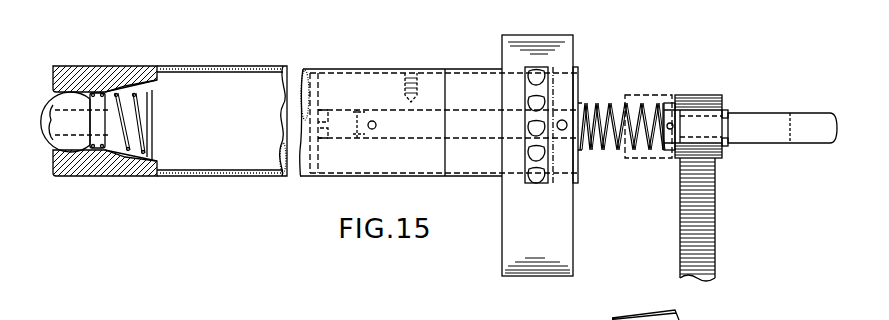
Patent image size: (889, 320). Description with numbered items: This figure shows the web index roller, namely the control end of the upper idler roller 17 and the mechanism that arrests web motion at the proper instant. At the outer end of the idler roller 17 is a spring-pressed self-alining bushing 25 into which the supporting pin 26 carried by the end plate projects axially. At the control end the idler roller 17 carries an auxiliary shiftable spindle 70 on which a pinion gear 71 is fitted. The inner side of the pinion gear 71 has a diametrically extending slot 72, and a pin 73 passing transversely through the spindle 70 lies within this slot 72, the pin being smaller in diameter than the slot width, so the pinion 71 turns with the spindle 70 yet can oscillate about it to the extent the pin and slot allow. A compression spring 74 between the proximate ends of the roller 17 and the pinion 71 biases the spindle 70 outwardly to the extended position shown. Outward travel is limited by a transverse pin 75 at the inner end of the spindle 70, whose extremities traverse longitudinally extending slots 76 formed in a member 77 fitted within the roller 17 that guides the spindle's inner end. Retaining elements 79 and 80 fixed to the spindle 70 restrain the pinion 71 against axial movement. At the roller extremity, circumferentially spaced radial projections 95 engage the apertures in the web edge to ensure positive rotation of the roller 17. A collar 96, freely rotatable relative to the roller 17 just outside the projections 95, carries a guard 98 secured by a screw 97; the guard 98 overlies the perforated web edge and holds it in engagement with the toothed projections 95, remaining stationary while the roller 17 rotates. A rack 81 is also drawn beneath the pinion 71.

The upper idler roller 17 is at (232, 67).
The spring-pressed self-alining bushing 25 is at (68, 98).
The supporting pin 26 is at (50, 137).
The auxiliary shiftable spindle 70 is at (797, 121).
The pinion gear 71 is at (702, 105).
The slot 72 is at (670, 122).
The pin 73 is at (675, 156).
The compression spring 74 is at (603, 108).
The transverse pin 75 is at (373, 121).
The longitudinally extending slots 76 is at (335, 120).
The member 77 is at (357, 80).
The retaining element 79 is at (660, 148).
The retaining element 80 is at (728, 112).
The rack 81 is at (703, 237).
The radial projections 95 is at (552, 75).
The collar 96 is at (544, 102).
The screw 97 is at (575, 152).
The guard 98 is at (520, 228).